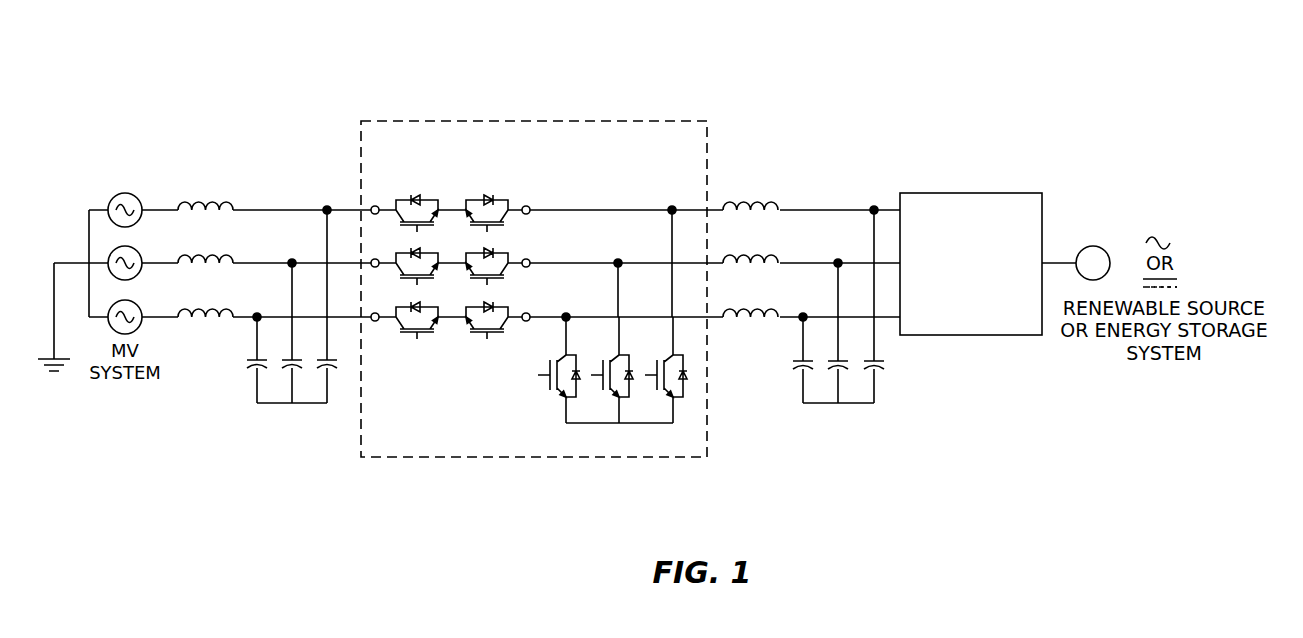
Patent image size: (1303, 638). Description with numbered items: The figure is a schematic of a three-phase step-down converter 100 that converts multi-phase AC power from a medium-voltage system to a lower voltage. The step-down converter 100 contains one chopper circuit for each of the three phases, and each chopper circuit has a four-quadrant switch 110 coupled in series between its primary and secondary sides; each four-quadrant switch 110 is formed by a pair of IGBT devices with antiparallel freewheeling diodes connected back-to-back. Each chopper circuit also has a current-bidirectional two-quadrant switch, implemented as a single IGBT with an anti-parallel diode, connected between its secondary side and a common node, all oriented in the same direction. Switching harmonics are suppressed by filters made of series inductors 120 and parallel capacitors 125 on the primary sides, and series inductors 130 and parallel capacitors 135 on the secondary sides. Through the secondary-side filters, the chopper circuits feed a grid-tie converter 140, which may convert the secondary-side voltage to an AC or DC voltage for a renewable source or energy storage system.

The step-down converter 100 is at (944, 84).
The four-quadrant switch 110 is at (392, 180).
The series inductors 120 is at (217, 197).
The parallel capacitors 125 is at (251, 369).
The series inductors 130 is at (764, 195).
The parallel capacitors 135 is at (880, 375).
The grid-tie converter 140 is at (955, 295).